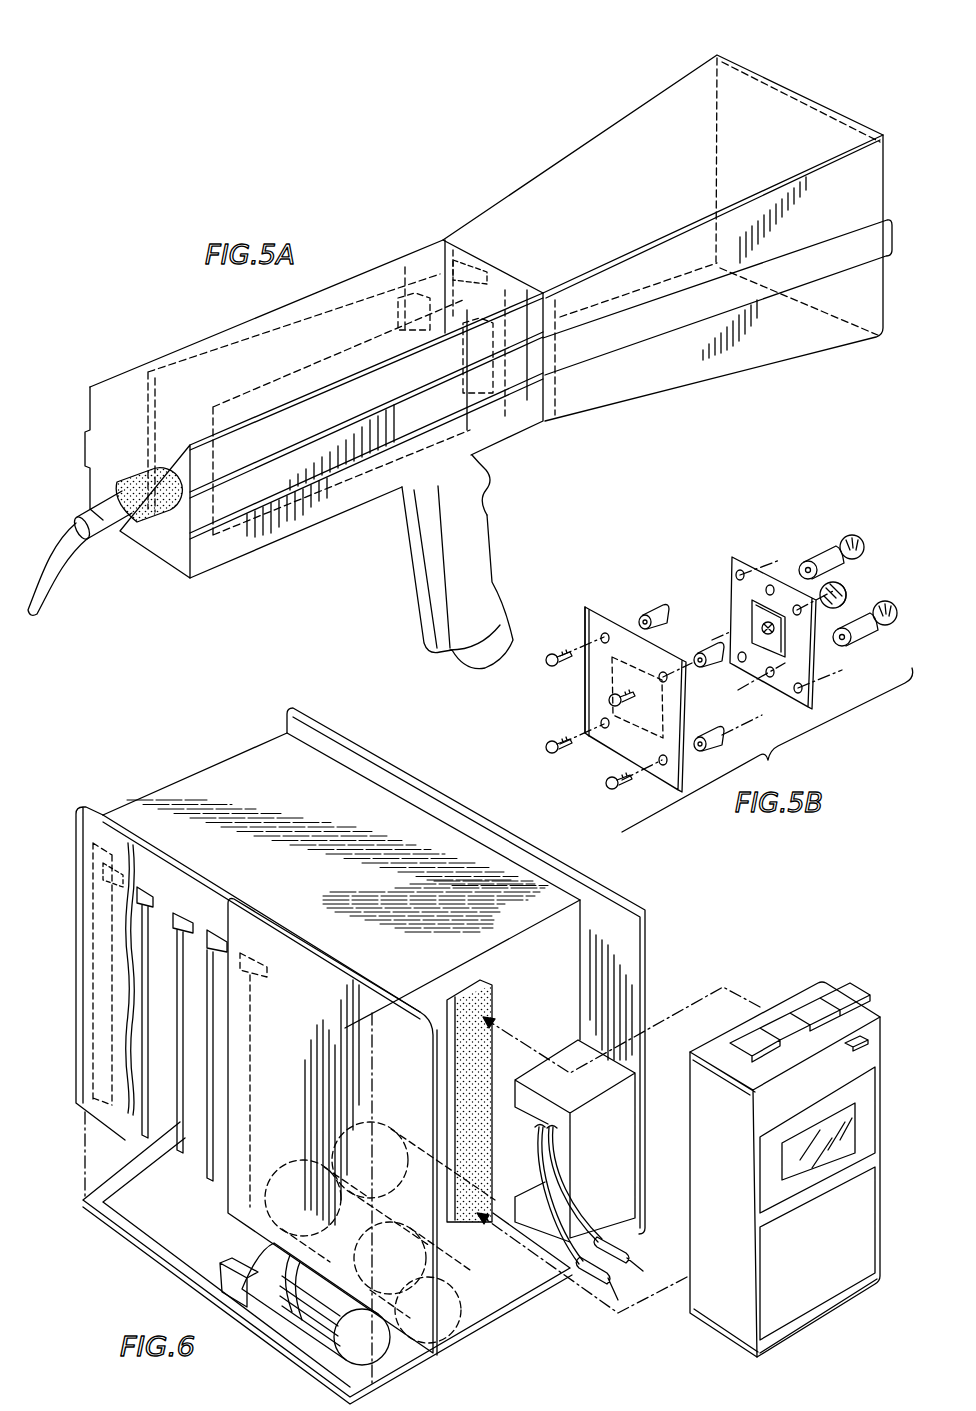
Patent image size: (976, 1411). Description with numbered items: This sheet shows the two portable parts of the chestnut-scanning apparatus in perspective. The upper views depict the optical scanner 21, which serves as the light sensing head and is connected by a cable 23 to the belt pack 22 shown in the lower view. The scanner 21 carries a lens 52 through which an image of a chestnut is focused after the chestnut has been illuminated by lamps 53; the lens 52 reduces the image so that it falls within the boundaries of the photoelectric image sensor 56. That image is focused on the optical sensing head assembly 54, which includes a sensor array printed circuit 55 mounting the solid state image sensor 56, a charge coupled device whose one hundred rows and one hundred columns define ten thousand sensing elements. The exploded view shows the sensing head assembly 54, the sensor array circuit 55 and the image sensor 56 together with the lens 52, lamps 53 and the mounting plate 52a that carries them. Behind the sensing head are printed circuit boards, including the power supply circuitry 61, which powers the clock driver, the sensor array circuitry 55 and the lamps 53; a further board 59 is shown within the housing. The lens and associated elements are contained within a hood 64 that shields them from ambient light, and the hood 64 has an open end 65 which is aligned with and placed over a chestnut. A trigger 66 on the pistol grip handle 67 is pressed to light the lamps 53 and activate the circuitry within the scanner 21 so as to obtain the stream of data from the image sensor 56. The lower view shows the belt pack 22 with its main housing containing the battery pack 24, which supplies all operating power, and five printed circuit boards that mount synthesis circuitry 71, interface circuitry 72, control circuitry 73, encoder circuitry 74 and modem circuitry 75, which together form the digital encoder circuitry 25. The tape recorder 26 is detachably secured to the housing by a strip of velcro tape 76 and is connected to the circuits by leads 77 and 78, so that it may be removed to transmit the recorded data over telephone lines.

In FIG. 5A, the optical scanner 21 is at (556, 428).
In FIG. 6, the belt pack 22 is at (178, 765).
In FIG. 5A, the cable 23 is at (56, 580).
In FIG. 6, the battery pack 24 is at (465, 1300).
In FIG. 6, the digital encoder circuitry 25 is at (374, 971).
In FIG. 6, the tape recorder 26 is at (785, 1169).
In FIG. 5B, the lens 52 is at (850, 587).
In FIG. 5A, the mounting plate 52a is at (500, 280).
In FIG. 5B, the mounting plate 52a is at (748, 560).
In FIG. 5B, the lamps 53 is at (842, 533).
In FIG. 5A, the optical sensing head assembly 54 is at (430, 255).
In FIG. 5B, the optical sensing head assembly 54 is at (624, 617).
In FIG. 5B, the sensor array printed circuit 55 is at (592, 617).
In FIG. 5B, the photoelectric image sensor 56 is at (663, 700).
In FIG. 5A, the circuit board 59 is at (208, 365).
In FIG. 5A, the power supply circuitry 61 is at (238, 540).
In FIG. 5A, the hood 64 is at (595, 150).
In FIG. 5A, the open end 65 is at (823, 142).
In FIG. 5A, the trigger 66 is at (485, 458).
In FIG. 5A, the pistol grip handle 67 is at (470, 534).
In FIG. 6, the synthesis circuitry 71 is at (228, 1213).
In FIG. 6, the interface circuitry 72 is at (213, 1181).
In FIG. 6, the control circuitry 73 is at (178, 1153).
In FIG. 6, the encoder circuitry 74 is at (147, 1137).
In FIG. 6, the modem circuitry 75 is at (110, 997).
In FIG. 6, the strip of velcro tape 76 is at (484, 997).
In FIG. 6, the lead 77 is at (580, 1212).
In FIG. 6, the lead 78 is at (590, 1282).